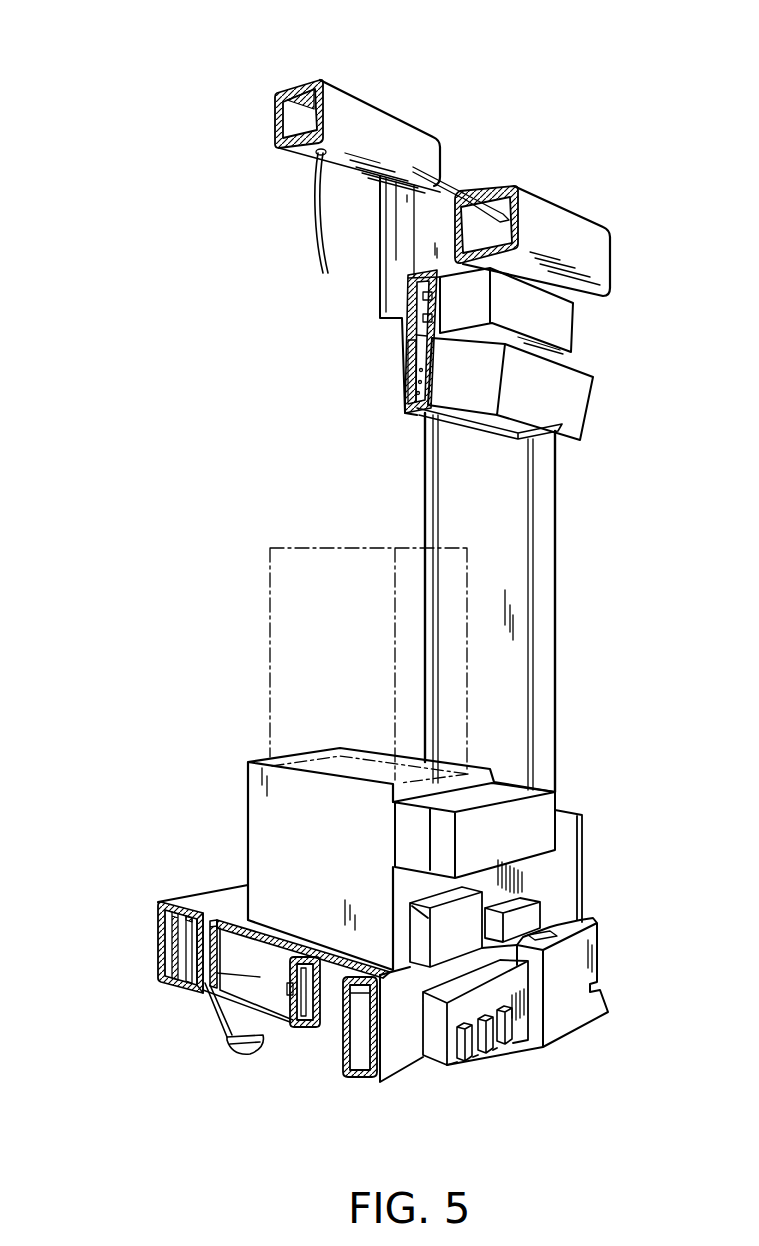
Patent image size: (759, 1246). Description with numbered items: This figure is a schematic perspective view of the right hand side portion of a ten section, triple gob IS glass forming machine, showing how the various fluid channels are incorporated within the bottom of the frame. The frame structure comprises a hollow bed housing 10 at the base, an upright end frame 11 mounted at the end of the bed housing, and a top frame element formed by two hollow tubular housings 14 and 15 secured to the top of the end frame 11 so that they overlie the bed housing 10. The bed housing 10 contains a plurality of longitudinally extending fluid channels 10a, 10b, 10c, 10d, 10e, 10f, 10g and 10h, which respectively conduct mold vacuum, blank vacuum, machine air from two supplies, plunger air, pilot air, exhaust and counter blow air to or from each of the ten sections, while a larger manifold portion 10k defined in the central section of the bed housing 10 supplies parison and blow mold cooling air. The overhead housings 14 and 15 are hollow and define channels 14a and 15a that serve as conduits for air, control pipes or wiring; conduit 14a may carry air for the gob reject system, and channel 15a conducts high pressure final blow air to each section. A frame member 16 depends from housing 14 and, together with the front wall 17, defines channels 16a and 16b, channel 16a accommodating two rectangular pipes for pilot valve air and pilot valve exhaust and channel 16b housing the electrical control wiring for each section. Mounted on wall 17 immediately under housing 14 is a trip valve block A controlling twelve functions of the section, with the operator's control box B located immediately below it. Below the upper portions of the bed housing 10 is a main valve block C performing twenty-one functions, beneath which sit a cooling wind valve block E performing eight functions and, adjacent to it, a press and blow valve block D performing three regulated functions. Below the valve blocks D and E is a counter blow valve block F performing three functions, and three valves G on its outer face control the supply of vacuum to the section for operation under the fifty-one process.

The bed housing 10 is at (260, 977).
The fluid channel 10a is at (170, 950).
The fluid channel 10b is at (180, 967).
The fluid channel 10c is at (190, 920).
The fluid channel 10d is at (198, 977).
The fluid channel 10e is at (212, 920).
The fluid channel 10f is at (230, 1037).
The fluid channel 10g is at (290, 1022).
The fluid channel 10h is at (308, 1027).
The manifold portion 10k is at (238, 1012).
The upright end frame 11 is at (557, 607).
The hollow tubular housing 14 is at (493, 193).
The channel 14a is at (508, 222).
The hollow tubular housing 15 is at (360, 97).
The channel 15a is at (313, 87).
The frame member 16 is at (410, 307).
The channel 16a is at (420, 315).
The channel 16b is at (405, 360).
The front wall 17 is at (433, 312).
The trip valve block A is at (575, 337).
The operator's control box B is at (588, 408).
The main valve block C is at (532, 815).
The press and blow valve block D is at (525, 913).
The cooling wind valve block E is at (412, 903).
The counter blow valve block F is at (438, 1040).
The valves G is at (508, 1042).